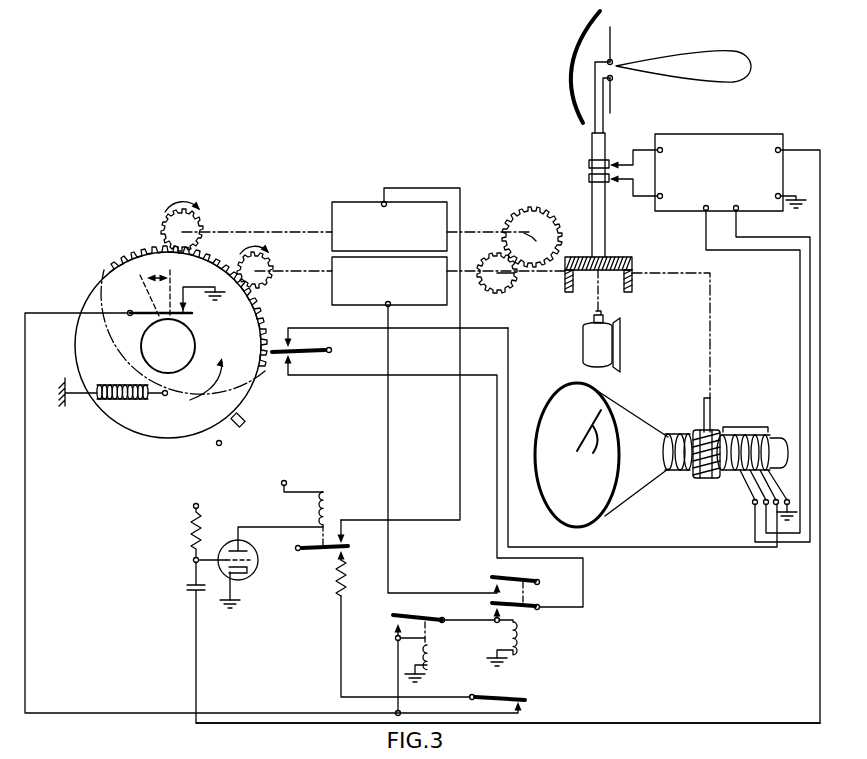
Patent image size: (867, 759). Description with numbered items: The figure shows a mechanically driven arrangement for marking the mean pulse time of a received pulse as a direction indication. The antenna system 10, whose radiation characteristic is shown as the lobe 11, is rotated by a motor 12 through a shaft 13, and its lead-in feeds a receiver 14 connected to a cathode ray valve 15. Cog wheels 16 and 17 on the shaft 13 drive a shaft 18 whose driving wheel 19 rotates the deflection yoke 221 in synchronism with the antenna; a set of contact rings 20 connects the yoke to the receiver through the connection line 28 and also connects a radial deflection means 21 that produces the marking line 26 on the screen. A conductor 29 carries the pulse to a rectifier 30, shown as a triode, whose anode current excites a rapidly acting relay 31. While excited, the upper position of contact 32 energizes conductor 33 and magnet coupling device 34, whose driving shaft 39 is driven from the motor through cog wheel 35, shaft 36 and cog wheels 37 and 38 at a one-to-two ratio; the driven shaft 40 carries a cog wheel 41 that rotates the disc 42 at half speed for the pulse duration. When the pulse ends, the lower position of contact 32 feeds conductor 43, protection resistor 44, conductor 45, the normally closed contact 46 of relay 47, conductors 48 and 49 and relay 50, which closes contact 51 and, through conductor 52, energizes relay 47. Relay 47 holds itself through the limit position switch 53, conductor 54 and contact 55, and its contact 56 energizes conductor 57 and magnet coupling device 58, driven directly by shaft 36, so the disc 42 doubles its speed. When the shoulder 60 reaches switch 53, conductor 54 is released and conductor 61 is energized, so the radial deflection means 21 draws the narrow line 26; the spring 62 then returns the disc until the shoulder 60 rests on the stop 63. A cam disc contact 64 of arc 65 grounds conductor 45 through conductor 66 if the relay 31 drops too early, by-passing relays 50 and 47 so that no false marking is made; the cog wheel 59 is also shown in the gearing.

The antenna system 10 is at (612, 50).
The lobe 11 is at (742, 56).
The motor 12 is at (621, 344).
The shaft 13 is at (591, 201).
The receiver 14 is at (719, 133).
The cathode ray valve 15 is at (629, 414).
The cog wheel 16 is at (630, 257).
The cog wheel 17 is at (632, 268).
The shaft 18 is at (708, 351).
The driving wheel 19 is at (703, 425).
The set of contact rings 20 is at (757, 457).
The radial deflection means 21 is at (693, 432).
The deflection yoke 221 is at (667, 470).
The line 26 is at (590, 443).
The connection line 28 is at (800, 349).
The conductor 29 is at (818, 188).
The rectifier 30 is at (257, 566).
The relay 31 is at (316, 516).
The contact 32 is at (349, 548).
The conductor 33 is at (448, 190).
The magnet coupling device 34 is at (370, 198).
The cog wheel 35 is at (567, 292).
The shaft 36 is at (552, 276).
The cog wheel 37 is at (520, 286).
The cog wheel 38 is at (535, 215).
The driving shaft 39 is at (497, 231).
The driven shaft 40 is at (316, 229).
The cog wheel 41 is at (202, 224).
The disc 42 is at (226, 343).
The conductor 43 is at (348, 566).
The protection resistor 44 is at (346, 590).
The conductor 45 is at (341, 652).
The normally closed contact 46 is at (530, 705).
The relay 47 is at (519, 648).
The conductor 48 is at (284, 712).
The conductor 49 is at (398, 669).
The relay 50 is at (432, 650).
The normally open contact 51 is at (395, 628).
The conductor 52 is at (476, 620).
The limit position switch 53 is at (292, 340).
The conductor 54 is at (450, 376).
The contact 55 is at (493, 612).
The contact 56 is at (494, 590).
The conductor 57 is at (389, 548).
The magnet coupling device 58 is at (372, 308).
The gear 59 is at (268, 284).
The shoulder 60 is at (247, 421).
The conductor 61 is at (653, 547).
The spring 62 is at (134, 400).
The stop 63 is at (223, 445).
The cam disc contact 64 is at (153, 320).
The arc 65 is at (154, 285).
The conductor 66 is at (27, 578).